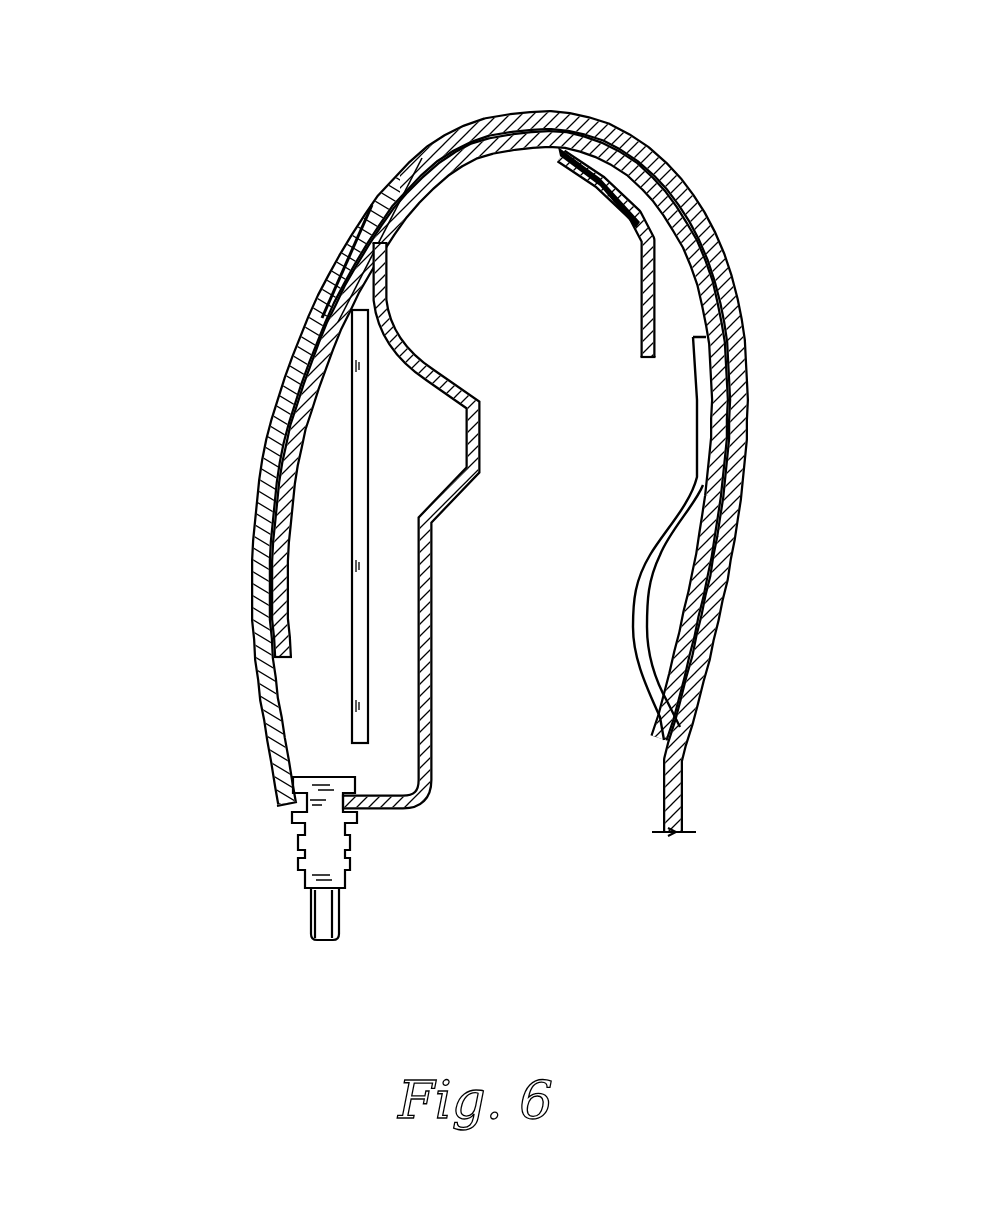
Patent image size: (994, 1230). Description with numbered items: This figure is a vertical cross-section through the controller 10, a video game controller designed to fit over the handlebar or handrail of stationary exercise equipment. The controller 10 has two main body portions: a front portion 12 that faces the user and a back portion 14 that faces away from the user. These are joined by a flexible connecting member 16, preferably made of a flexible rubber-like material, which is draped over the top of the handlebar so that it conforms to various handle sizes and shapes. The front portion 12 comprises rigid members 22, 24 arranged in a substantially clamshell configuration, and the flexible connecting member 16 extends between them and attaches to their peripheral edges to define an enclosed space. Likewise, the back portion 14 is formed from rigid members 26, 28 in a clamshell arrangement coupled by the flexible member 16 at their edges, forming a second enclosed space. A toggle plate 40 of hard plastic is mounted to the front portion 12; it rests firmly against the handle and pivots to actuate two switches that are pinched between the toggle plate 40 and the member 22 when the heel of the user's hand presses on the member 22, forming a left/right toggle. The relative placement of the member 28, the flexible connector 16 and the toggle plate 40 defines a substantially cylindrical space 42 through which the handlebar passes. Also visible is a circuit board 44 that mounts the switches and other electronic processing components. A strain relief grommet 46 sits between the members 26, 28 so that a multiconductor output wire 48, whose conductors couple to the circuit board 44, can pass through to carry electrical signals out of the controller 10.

The controller 10 is at (479, 488).
The front portion 12 is at (719, 452).
The back portion 14 is at (299, 558).
The flexible connecting member 16 is at (446, 422).
The member 22 is at (750, 517).
The member 24 is at (638, 595).
The rigid member 26 is at (252, 600).
The rigid member 28 is at (432, 714).
The toggle plate 40 is at (638, 320).
The cylindrical space 42 is at (442, 224).
The circuit board 44 is at (357, 715).
The strain relief grommet 46 is at (356, 838).
The multiconductor output wire 48 is at (343, 915).